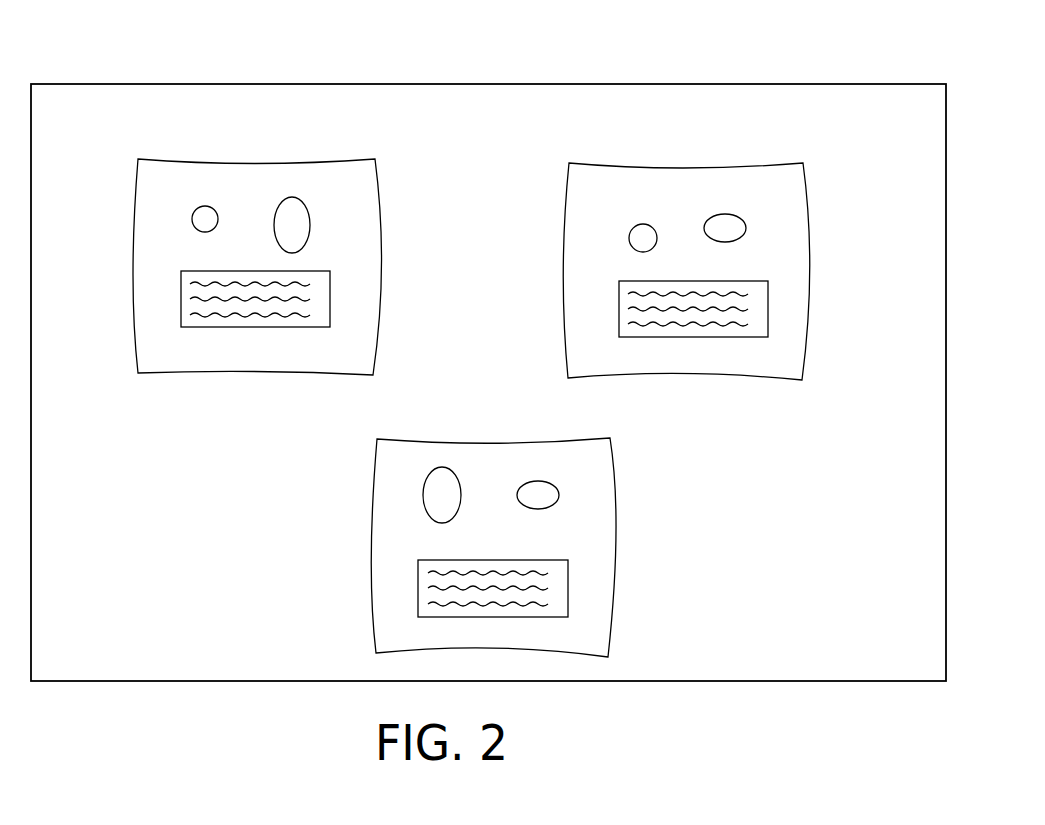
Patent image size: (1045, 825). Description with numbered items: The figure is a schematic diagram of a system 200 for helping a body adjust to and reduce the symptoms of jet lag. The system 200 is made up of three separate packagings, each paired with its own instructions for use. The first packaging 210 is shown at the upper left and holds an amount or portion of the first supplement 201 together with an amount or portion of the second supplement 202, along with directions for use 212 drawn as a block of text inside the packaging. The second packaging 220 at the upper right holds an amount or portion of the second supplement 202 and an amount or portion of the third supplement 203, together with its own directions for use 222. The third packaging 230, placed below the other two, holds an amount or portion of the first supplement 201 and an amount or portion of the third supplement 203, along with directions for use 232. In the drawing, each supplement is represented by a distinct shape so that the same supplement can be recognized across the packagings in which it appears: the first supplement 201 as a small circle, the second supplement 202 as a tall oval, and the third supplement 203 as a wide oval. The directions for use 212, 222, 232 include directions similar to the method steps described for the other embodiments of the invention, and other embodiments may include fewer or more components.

The system 200 is at (176, 62).
The first supplement 201 is at (198, 220).
The second supplement 202 is at (292, 208).
The third supplement 203 is at (723, 215).
The first packaging 210 is at (153, 308).
The directions for use 212 is at (330, 308).
The second packaging 220 is at (592, 302).
The directions for use 222 is at (770, 307).
The third packaging 230 is at (390, 575).
The directions for use 232 is at (563, 587).